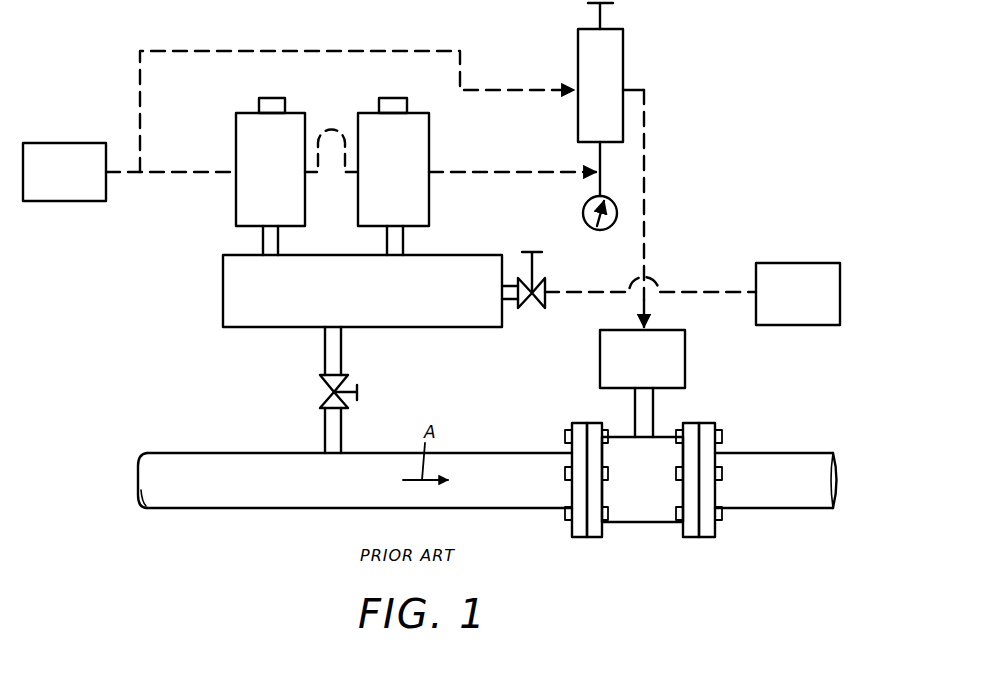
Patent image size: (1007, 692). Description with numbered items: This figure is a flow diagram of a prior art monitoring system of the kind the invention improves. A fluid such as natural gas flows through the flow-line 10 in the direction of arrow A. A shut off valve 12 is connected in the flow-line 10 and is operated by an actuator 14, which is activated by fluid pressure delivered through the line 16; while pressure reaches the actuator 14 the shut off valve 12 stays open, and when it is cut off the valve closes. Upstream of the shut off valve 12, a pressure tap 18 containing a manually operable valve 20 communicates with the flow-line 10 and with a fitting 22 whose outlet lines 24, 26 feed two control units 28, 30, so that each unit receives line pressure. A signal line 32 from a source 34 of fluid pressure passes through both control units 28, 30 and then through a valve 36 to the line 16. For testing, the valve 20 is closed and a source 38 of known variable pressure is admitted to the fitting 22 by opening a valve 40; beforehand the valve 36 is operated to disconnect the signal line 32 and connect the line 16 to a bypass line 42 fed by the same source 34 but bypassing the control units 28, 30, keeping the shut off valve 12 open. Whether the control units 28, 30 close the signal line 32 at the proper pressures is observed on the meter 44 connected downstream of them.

The flow-line 10 is at (482, 450).
The shut off valve 12 is at (647, 522).
The actuator 14 is at (687, 353).
The line 16 is at (646, 213).
The pressure tap 18 is at (343, 431).
The manually operable valve 20 is at (322, 377).
The fitting 22 is at (223, 265).
The outlet line 24 is at (280, 243).
The outlet line 26 is at (403, 243).
The control unit 28 is at (236, 192).
The control unit 30 is at (429, 133).
The signal line 32 is at (173, 170).
The source of fluid pressure 34 is at (57, 143).
The valve 36 is at (625, 43).
The source of known selectively variable pressure 38 is at (777, 263).
The valve 40 is at (546, 283).
The bypass line 42 is at (325, 50).
The meter 44 is at (583, 211).